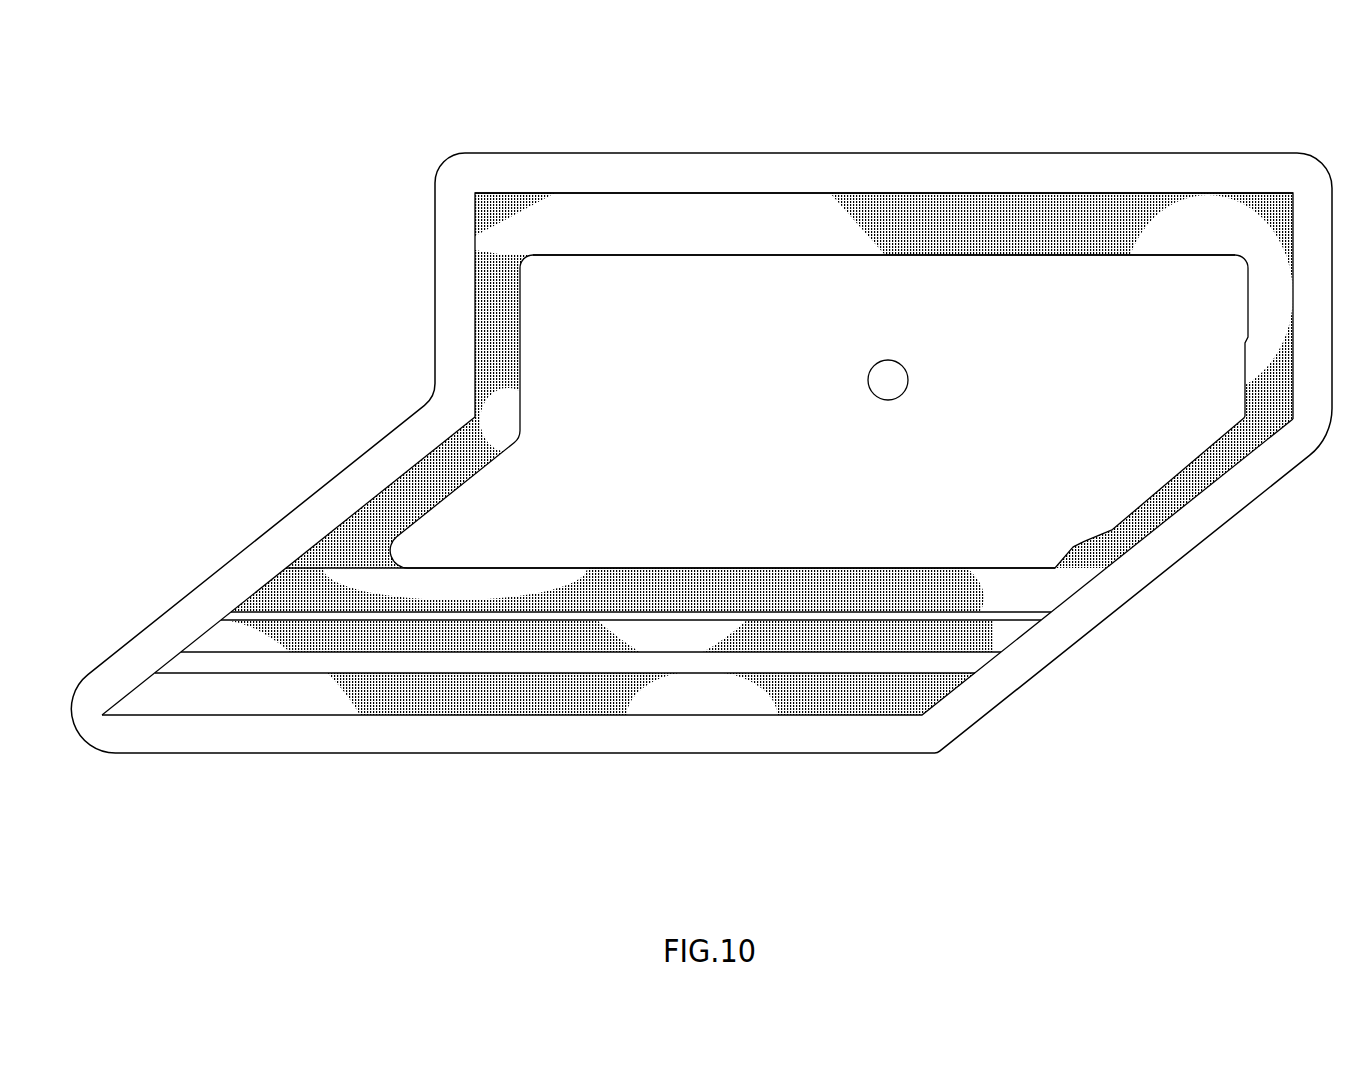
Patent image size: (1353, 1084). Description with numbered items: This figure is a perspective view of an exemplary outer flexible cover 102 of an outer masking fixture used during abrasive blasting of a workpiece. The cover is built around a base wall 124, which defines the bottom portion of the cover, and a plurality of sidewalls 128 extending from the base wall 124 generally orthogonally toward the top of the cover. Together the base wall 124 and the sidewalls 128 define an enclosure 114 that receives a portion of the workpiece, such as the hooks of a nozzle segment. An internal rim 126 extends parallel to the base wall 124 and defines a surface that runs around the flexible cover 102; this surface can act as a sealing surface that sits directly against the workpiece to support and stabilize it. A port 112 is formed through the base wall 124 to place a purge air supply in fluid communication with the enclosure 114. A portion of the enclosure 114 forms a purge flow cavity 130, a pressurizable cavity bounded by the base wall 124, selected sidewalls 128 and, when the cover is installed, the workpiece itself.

The flexible cover 102 is at (415, 142).
The port 112 is at (906, 383).
The enclosure 114 is at (778, 698).
The base wall 124 is at (703, 400).
The internal rim 126 is at (716, 236).
The sidewalls 128 is at (1205, 452).
The purge flow cavity 130 is at (950, 290).